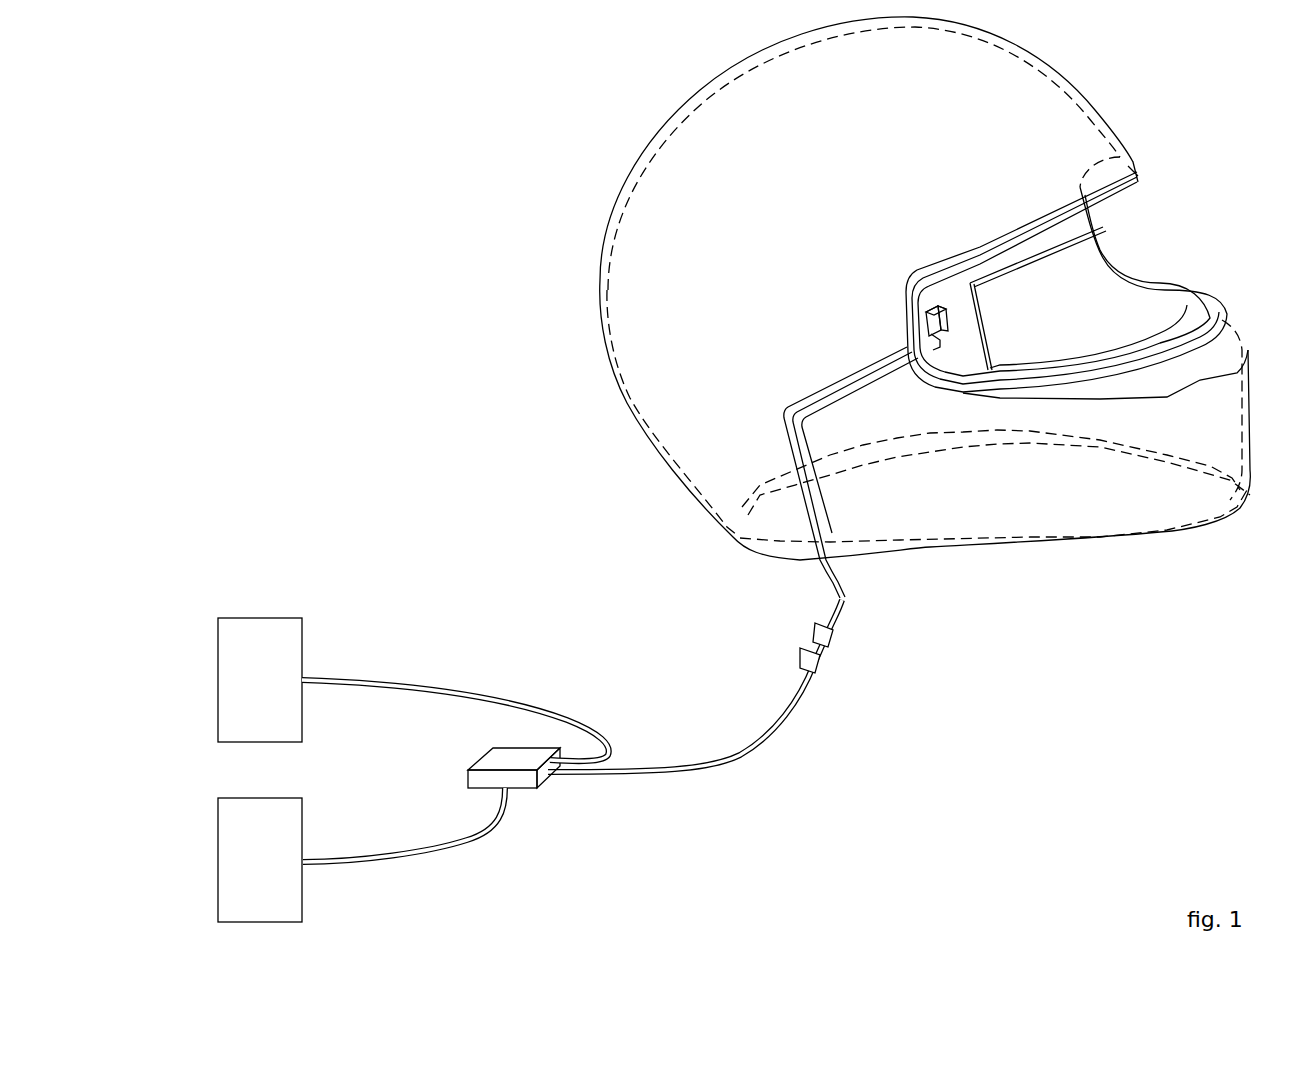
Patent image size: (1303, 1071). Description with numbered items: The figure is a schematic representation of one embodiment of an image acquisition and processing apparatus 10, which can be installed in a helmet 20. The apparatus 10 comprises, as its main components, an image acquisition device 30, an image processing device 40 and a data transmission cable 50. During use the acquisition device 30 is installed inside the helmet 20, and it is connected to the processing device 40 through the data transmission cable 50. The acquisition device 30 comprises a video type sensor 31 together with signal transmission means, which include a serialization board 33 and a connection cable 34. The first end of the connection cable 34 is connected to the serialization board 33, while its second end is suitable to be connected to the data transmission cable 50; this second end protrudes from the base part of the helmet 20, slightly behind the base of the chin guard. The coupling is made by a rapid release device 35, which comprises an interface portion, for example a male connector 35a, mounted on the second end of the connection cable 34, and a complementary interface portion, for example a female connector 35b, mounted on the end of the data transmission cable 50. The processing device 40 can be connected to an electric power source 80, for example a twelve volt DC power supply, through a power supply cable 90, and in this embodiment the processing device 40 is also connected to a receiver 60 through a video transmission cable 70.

The image acquisition and processing apparatus 10 is at (310, 209).
The helmet 20 is at (676, 107).
The image acquisition device 30 is at (915, 603).
The video type sensor 31 is at (937, 317).
The serialization board 33 is at (940, 340).
The connection cable 34 is at (840, 600).
The rapid release device 35 is at (888, 671).
The male connector 35a is at (829, 640).
The female connector 35b is at (814, 666).
The image processing device 40 is at (545, 805).
The data transmission cable 50 is at (753, 744).
The receiver 60 is at (254, 834).
The video transmission cable 70 is at (410, 860).
The electric power source 80 is at (247, 632).
The power supply cable 90 is at (382, 684).